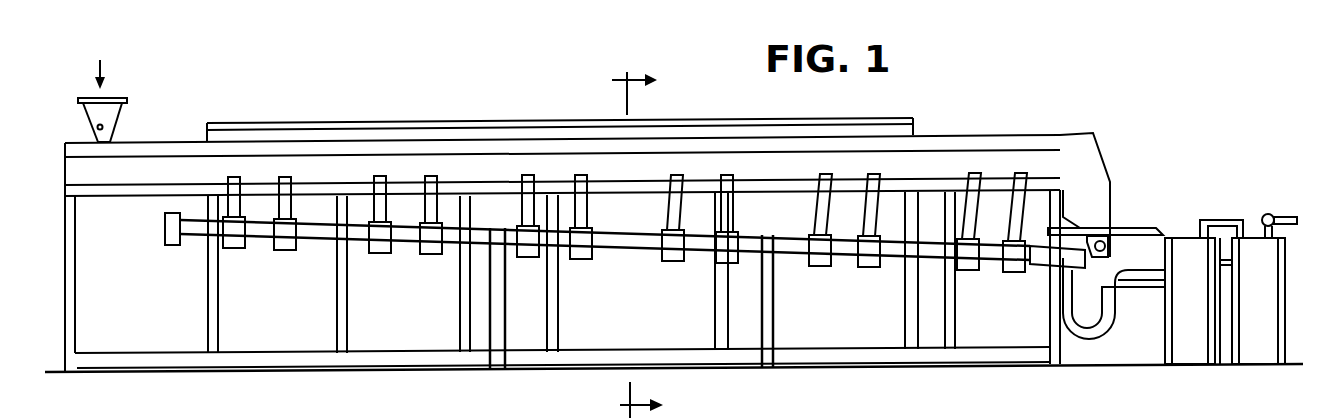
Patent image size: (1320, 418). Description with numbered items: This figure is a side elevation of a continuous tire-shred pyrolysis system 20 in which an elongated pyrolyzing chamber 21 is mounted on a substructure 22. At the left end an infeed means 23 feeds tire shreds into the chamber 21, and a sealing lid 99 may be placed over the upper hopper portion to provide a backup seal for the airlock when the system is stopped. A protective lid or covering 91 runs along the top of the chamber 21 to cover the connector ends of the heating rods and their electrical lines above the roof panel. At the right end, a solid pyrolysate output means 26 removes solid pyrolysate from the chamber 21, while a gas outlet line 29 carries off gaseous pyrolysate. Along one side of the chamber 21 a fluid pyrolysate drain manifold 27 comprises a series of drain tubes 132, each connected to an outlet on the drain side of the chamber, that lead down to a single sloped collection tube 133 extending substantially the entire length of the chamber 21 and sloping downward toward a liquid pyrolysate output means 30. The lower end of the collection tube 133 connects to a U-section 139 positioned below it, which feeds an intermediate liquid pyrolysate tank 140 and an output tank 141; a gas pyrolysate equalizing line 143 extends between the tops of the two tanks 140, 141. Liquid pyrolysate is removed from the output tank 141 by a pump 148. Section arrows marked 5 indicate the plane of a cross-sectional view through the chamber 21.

The section line 5- 5 is at (650, 244).
The continuous pyrolyzing system 20 is at (528, 103).
The elongated pyrolyzing chamber 21 is at (922, 160).
The substructure 22 is at (340, 313).
The infeed means 23 is at (150, 111).
The solid pyrolysate output means 26 is at (1120, 149).
The fluid pyrolysate drain manifold 27 is at (625, 253).
The gas outlet line 29 is at (1125, 230).
The liquid pyrolysate output means 30 is at (1235, 267).
The protective lid or covering 91 is at (308, 122).
The sealing lid 99 is at (112, 97).
The drain tubes 132 is at (670, 222).
The sloped collection tube 133 is at (617, 237).
The U-section 139 is at (1087, 328).
The intermediate liquid pyrolysate tank 140 is at (1190, 319).
The output tank 141 is at (1258, 319).
The gas pyrolysate equalizing line 143 is at (1213, 222).
The pump 148 is at (1267, 213).